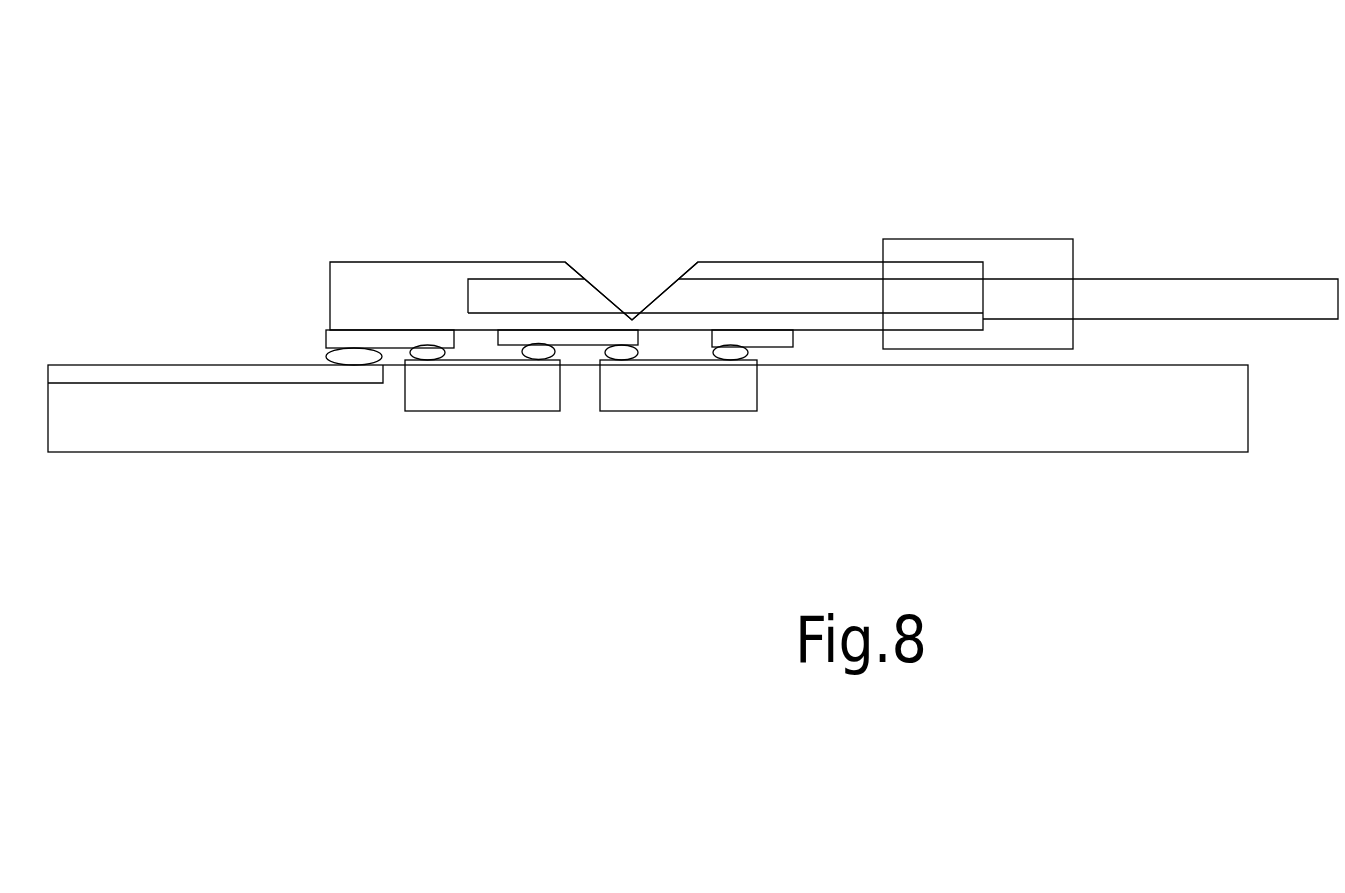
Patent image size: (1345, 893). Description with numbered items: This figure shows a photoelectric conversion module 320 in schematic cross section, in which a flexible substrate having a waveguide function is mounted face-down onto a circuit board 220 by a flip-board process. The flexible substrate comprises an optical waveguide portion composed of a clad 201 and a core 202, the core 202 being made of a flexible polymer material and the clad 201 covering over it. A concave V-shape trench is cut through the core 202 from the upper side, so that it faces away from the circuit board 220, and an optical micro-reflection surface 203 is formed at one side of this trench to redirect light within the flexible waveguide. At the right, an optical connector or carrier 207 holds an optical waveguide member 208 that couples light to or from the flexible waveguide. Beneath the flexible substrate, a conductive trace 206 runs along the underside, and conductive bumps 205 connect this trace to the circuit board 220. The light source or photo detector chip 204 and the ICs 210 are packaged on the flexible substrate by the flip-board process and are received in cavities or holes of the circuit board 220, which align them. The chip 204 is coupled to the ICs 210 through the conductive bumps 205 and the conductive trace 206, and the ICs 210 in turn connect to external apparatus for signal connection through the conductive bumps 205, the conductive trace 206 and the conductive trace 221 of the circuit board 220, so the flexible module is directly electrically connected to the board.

The photoelectric conversion module 320 is at (803, 123).
The clad 201 is at (363, 292).
The core 202 is at (510, 298).
The optical micro-reflection surface 203 is at (663, 290).
The photo detector chip 204 is at (692, 392).
The conductive bump 205 is at (733, 357).
The conductive trace 206 is at (327, 340).
The optical connector 207 is at (1030, 258).
The optical waveguide member 208 is at (1215, 303).
The ICs 210 is at (500, 402).
The circuit board 220 is at (269, 437).
The conductive trace of the circuit board 221 is at (143, 373).